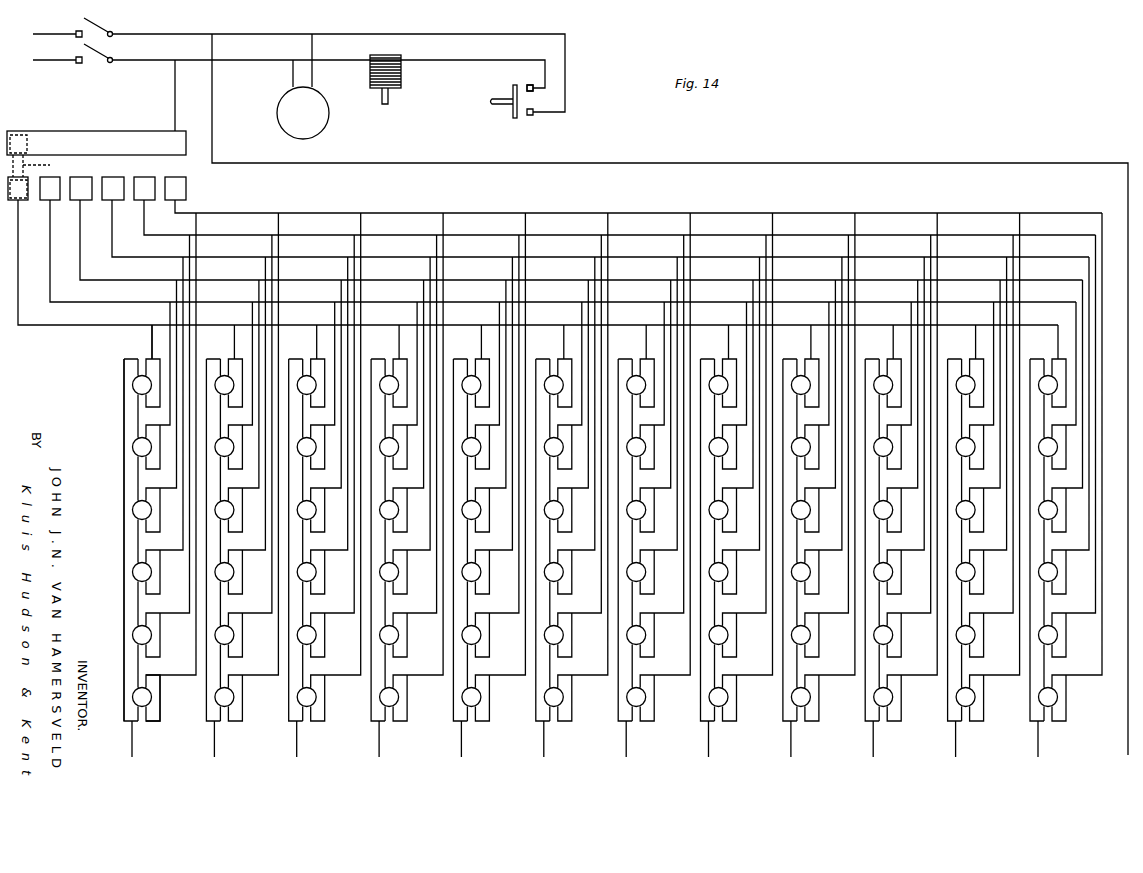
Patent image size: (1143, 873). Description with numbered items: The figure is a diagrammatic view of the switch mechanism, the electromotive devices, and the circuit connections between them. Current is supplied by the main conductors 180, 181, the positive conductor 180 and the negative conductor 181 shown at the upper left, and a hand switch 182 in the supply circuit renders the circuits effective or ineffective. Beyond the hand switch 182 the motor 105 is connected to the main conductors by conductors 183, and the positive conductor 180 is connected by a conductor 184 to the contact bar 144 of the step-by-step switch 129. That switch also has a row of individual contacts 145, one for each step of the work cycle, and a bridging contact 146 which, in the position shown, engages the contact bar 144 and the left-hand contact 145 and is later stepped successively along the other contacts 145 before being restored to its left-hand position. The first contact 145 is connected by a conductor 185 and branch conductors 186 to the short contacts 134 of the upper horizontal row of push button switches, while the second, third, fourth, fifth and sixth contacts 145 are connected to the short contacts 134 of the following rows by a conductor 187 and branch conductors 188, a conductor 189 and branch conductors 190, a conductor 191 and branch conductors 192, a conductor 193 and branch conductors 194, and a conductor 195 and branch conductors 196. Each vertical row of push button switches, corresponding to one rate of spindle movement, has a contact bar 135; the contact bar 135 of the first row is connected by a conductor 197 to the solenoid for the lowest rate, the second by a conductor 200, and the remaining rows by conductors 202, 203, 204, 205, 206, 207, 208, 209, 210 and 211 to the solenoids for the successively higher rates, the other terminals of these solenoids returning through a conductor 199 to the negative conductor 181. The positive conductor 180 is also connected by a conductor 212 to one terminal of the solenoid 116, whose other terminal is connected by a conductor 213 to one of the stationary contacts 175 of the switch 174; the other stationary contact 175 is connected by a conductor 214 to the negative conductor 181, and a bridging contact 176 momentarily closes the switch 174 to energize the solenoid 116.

The motor 105 is at (323, 113).
The solenoid 116 is at (402, 90).
The step-by-step switch 129 is at (96, 134).
The short contacts 134 is at (158, 710).
The contact bar 135 is at (130, 706).
The contact bar 144 is at (40, 131).
The individual contacts 145 is at (45, 200).
The bridging contact 146 is at (44, 166).
The switch 174 is at (517, 111).
The stationary contacts 175 is at (536, 83).
The bridging contact 176 is at (510, 97).
The main conductor 180 is at (48, 60).
The main conductor 181 is at (47, 34).
The hand switch 182 is at (94, 50).
The conductors 183 is at (305, 72).
The conductor 184 is at (175, 92).
The conductor 185 is at (52, 330).
The branch conductors 186 is at (150, 340).
The conductor 187 is at (108, 303).
The branch conductors 188 is at (168, 312).
The conductor 189 is at (136, 282).
The branch conductors 190 is at (170, 301).
The conductor 191 is at (157, 259).
The branch conductors 192 is at (176, 278).
The conductor 193 is at (185, 240).
The branch conductors 194 is at (185, 250).
The conductor 195 is at (220, 213).
The branch conductors 196 is at (196, 222).
The conductor 197 is at (132, 740).
The conductor 199 is at (868, 163).
The conductor 200 is at (214, 740).
The conductor 202 is at (297, 740).
The conductor 203 is at (379, 740).
The conductor 204 is at (461, 740).
The conductor 205 is at (544, 740).
The conductor 206 is at (626, 740).
The conductor 207 is at (708, 740).
The conductor 208 is at (791, 740).
The conductor 209 is at (873, 740).
The conductor 210 is at (955, 740).
The conductor 211 is at (1038, 740).
The conductor 212 is at (318, 58).
The conductor 213 is at (440, 60).
The conductor 214 is at (420, 34).